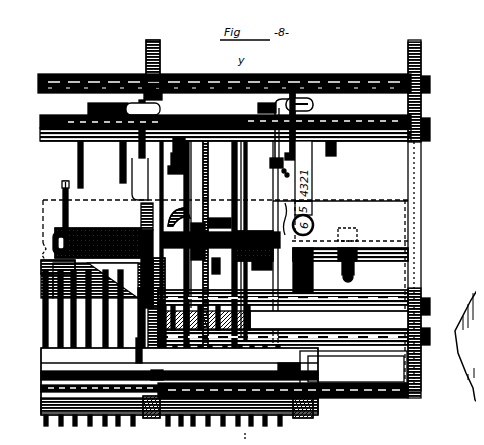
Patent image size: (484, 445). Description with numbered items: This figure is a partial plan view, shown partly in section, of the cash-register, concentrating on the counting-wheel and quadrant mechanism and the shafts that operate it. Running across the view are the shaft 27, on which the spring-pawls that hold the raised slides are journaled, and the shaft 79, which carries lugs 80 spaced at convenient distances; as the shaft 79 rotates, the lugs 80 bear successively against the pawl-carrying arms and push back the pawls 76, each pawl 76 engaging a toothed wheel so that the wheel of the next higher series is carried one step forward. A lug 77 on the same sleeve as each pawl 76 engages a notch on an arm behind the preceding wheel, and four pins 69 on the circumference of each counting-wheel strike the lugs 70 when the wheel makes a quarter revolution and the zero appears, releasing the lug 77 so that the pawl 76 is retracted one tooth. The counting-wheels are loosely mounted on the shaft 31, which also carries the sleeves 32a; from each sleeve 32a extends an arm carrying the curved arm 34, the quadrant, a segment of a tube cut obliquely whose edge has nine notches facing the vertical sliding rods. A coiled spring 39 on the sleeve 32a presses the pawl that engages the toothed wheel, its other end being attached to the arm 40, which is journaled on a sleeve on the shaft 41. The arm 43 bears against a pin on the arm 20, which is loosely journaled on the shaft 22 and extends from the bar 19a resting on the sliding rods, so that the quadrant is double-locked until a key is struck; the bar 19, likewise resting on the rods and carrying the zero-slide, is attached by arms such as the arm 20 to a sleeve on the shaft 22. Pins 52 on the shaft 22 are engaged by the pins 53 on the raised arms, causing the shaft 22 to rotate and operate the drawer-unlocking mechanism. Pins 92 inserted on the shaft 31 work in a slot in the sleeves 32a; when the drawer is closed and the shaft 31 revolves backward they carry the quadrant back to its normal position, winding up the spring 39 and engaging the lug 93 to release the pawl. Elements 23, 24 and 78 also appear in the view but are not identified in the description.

The bar 19 is at (290, 370).
The bar 19a is at (275, 364).
The arm 20 is at (229, 166).
The shaft 22 is at (347, 136).
The bar 23 is at (153, 368).
The pin 24 is at (144, 352).
The shaft 27 is at (292, 68).
The shaft 31 is at (175, 205).
The sleeve 32a is at (136, 222).
The curved arm (quadrant) 34 is at (97, 280).
The coiled spring 39 is at (80, 222).
The arm 40 is at (200, 158).
The shaft 41 is at (283, 320).
The arm 43 is at (62, 279).
The pin 52 is at (172, 224).
The pin 53 is at (174, 172).
The pin 69 is at (140, 179).
The lug 70 is at (128, 145).
The pawl 76 is at (225, 292).
The lug 77 is at (182, 108).
The guide 78 is at (311, 107).
The shaft 79 is at (209, 61).
The lug 80 is at (137, 47).
The pin 92 is at (154, 255).
The lug 93 is at (160, 283).